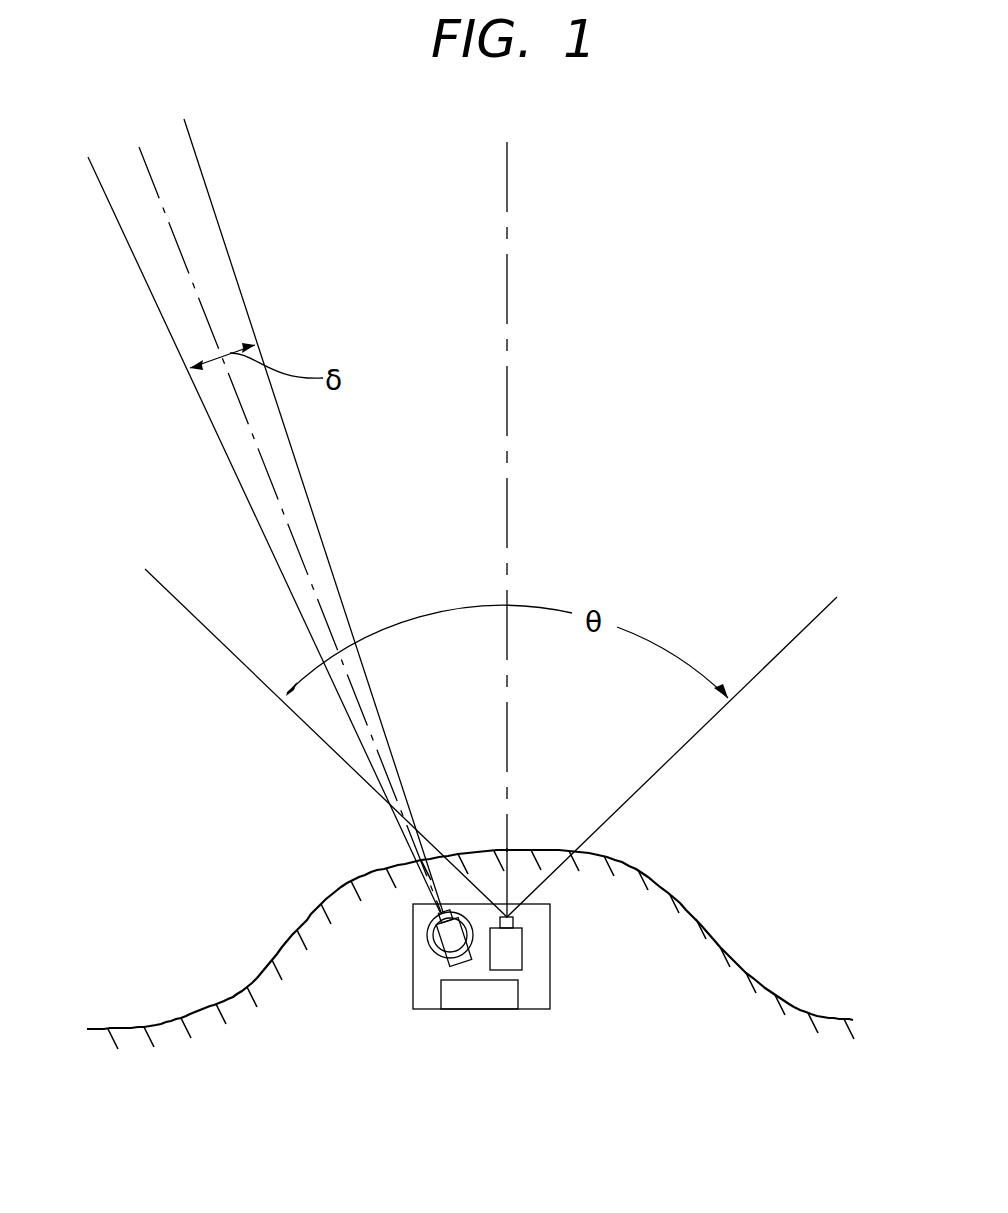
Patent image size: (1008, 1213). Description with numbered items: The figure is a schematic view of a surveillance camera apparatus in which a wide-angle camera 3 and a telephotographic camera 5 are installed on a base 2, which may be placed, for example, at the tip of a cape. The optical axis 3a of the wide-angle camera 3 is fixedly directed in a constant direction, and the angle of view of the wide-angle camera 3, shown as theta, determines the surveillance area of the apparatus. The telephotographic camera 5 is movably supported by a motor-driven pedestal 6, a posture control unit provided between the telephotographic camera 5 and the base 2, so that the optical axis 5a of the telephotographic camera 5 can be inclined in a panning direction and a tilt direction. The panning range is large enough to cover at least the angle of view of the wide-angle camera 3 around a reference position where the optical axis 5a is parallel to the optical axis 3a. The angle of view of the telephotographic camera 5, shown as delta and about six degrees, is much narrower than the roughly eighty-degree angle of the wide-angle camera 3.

The base 2 is at (550, 917).
The wide-angle camera 3 is at (523, 958).
The optical axis of the wide-angle camera 3a is at (507, 318).
The telephotographic camera 5 is at (457, 955).
The optical axis of the telephotographic camera 5a is at (182, 256).
The motor-driven pedestal 6 is at (427, 943).